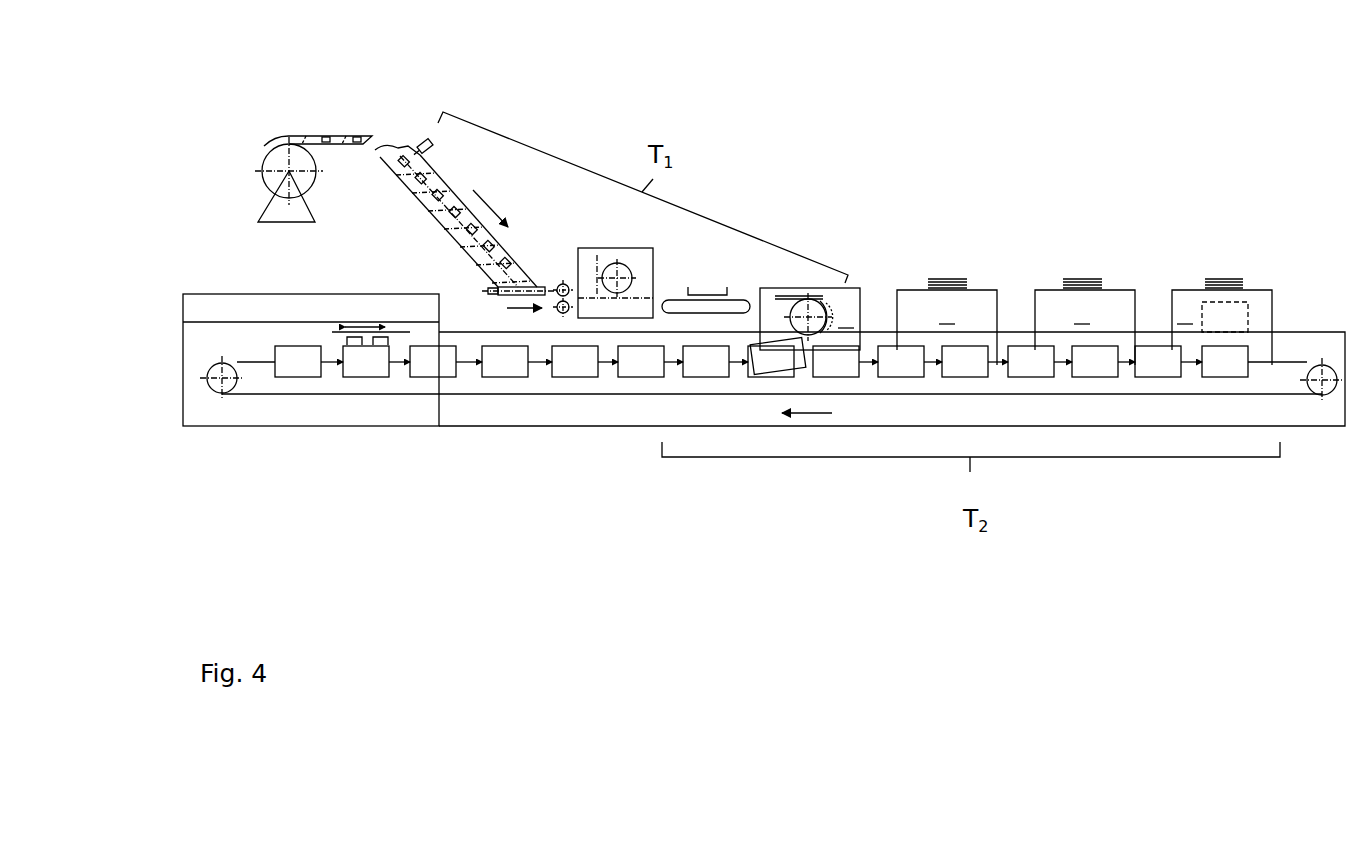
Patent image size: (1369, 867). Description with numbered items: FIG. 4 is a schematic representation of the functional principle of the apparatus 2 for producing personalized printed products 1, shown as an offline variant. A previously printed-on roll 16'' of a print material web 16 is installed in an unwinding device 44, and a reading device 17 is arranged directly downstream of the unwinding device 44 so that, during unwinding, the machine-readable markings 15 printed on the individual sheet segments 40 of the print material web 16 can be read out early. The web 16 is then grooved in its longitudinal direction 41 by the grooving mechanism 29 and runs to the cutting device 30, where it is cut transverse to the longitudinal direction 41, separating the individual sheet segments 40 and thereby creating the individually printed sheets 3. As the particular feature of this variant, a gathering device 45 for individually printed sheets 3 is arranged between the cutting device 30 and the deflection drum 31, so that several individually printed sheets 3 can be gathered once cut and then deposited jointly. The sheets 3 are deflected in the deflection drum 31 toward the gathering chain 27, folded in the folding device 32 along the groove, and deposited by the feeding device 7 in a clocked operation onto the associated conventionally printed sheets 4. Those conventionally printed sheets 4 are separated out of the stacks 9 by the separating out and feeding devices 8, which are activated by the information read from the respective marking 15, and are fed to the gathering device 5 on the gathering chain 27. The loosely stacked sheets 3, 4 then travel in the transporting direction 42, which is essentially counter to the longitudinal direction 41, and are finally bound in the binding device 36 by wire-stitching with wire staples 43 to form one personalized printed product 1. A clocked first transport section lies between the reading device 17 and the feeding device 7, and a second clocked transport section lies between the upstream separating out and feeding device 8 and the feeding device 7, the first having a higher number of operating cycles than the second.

The personalized printed product 1 is at (298, 377).
The apparatus 2 is at (862, 160).
The individually printed sheet 3 is at (780, 358).
The conventionally printed sheet 4 is at (967, 284).
The gathering device 5 is at (905, 243).
The feeding device 7 is at (810, 275).
The separating out and feeding device 8 is at (1084, 327).
The stack 9 is at (950, 265).
The machine-readable marking 15 is at (355, 136).
The print material web 16 is at (416, 174).
The previously printed-on roll 16'' is at (241, 108).
The reading device 17 is at (425, 142).
The gathering chain 27 is at (1283, 368).
The grooving mechanism 29 is at (562, 285).
The cutting device 30 is at (635, 258).
The deflection drum 31 is at (817, 306).
The folding device 32 is at (813, 347).
The binding device 36 is at (367, 333).
The individual sheet segment 40 is at (328, 145).
The longitudinal direction 41 is at (522, 308).
The transporting direction 42 is at (810, 413).
The wire staple 43 is at (345, 339).
The unwinding device 44 is at (273, 216).
The gathering device for individually printed sheets 45 is at (703, 293).